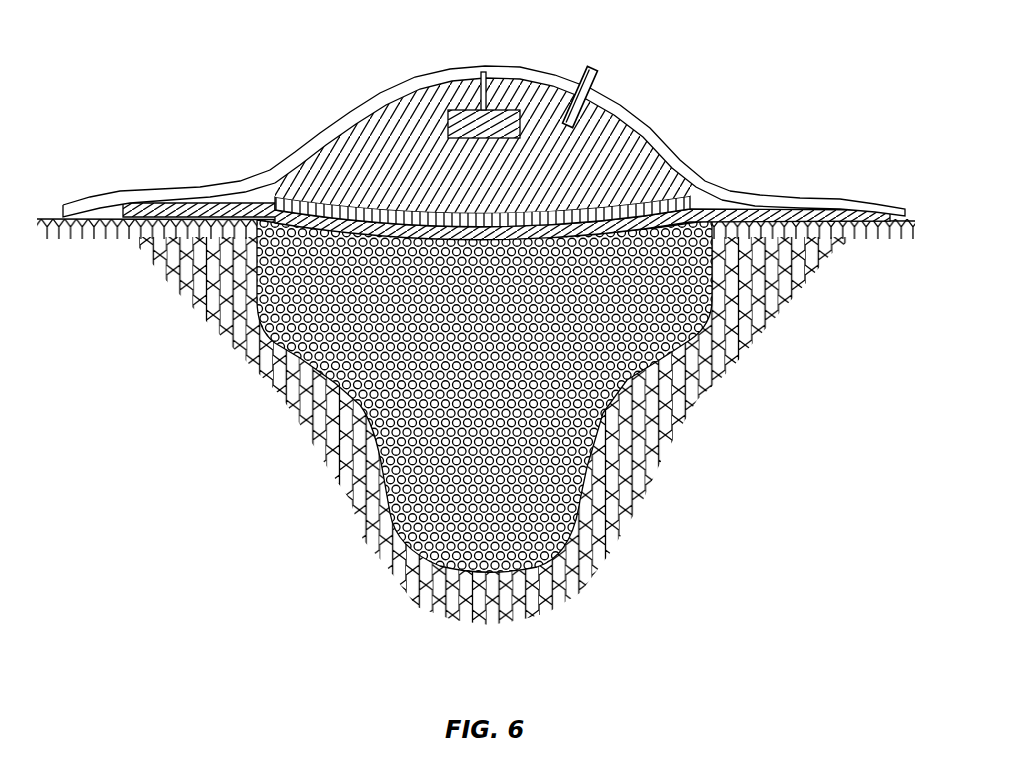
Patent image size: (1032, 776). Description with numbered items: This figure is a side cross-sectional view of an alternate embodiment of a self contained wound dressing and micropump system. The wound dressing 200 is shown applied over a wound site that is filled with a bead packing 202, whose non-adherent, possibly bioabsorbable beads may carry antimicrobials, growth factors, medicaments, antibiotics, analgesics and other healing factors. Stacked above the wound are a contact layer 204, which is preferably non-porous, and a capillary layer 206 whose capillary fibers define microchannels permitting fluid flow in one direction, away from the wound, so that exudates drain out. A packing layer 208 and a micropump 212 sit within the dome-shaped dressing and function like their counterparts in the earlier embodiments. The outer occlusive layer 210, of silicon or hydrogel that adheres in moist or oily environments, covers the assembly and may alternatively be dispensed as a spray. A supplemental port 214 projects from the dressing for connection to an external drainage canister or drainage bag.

The wound dressing 200 is at (278, 426).
The bead packing 202 is at (380, 494).
The contact layer 204 is at (775, 200).
The capillary layer 206 is at (275, 195).
The packing layer 208 is at (375, 138).
The occlusive layer 210 is at (685, 163).
The micropump 212 is at (470, 72).
The supplemental port 214 is at (598, 66).